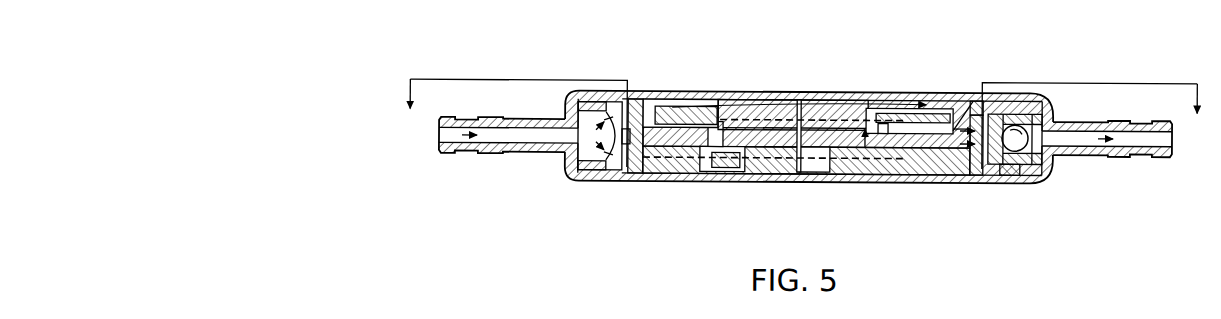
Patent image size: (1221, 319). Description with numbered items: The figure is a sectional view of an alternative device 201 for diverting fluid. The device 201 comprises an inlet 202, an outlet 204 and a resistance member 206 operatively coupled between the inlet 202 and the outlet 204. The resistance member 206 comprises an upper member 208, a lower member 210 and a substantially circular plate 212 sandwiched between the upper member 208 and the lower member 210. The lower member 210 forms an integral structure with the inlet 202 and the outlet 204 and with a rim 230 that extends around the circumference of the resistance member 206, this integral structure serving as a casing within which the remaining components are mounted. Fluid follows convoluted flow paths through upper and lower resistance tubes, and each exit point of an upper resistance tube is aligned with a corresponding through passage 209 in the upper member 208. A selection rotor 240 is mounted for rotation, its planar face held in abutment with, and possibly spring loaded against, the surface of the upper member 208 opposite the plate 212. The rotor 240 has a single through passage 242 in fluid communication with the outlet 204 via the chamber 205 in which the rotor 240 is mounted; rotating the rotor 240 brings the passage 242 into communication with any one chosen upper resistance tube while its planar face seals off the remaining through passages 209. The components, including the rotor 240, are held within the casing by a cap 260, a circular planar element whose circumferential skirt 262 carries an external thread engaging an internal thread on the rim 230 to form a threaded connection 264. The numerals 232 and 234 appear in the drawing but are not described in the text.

The device 201 is at (371, 85).
The inlet 202 is at (463, 135).
The outlet 204 is at (1143, 136).
The chamber 205 is at (945, 101).
The resistance member 206 is at (690, 208).
The upper member 208 is at (955, 129).
The through passage 209 is at (858, 128).
The lower member 210 is at (923, 174).
The circular plate 212 is at (975, 149).
The rim 230 is at (615, 114).
The valve seat 232 is at (570, 177).
The outlet shoulder 234 is at (1053, 100).
The selection rotor 240 is at (767, 122).
The through passage 242 is at (865, 113).
The cap 260 is at (702, 94).
The circumferential skirt 262 is at (1022, 175).
The threaded connection 264 is at (629, 93).